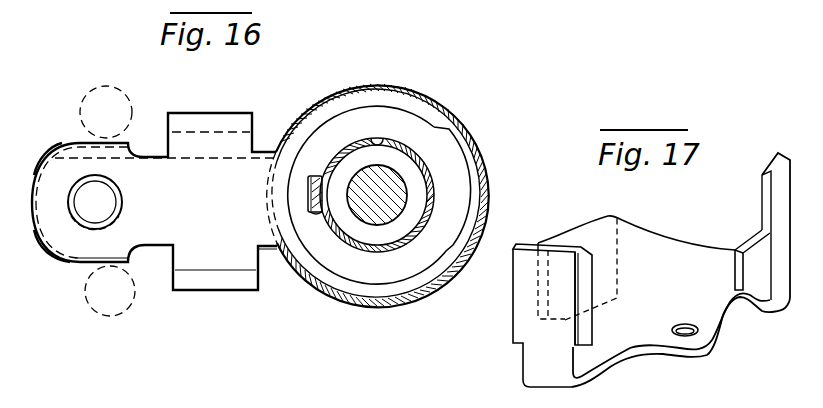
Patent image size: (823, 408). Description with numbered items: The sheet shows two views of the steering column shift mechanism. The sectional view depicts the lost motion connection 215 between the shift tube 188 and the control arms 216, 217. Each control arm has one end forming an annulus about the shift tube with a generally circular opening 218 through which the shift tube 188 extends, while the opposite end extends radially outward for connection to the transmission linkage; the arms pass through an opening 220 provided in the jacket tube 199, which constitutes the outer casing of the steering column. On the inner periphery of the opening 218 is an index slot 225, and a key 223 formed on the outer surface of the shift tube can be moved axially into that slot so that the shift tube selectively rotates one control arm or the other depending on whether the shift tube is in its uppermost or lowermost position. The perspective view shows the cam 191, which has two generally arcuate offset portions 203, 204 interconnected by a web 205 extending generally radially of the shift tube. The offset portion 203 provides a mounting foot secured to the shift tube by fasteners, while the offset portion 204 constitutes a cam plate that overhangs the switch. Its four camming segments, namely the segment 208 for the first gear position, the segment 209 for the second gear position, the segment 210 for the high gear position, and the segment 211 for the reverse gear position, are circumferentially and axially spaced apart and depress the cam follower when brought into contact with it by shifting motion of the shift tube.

In FIG. 16, the lost motion connection 215 is at (290, 207).
In FIG. 16, the control arm 216 is at (70, 267).
In FIG. 16, the control arm 217 is at (57, 170).
In FIG. 16, the opening 220 is at (293, 122).
In FIG. 16, the jacket tube 199 is at (436, 290).
In FIG. 16, the shift tube 188 is at (427, 158).
In FIG. 16, the circular opening 218 is at (387, 137).
In FIG. 16, the index slot 225 is at (307, 188).
In FIG. 16, the key 223 is at (317, 210).
In FIG. 17, the cam 191 is at (658, 358).
In FIG. 17, the cam plate 204 is at (510, 322).
In FIG. 17, the camming segment 209 is at (592, 321).
In FIG. 17, the offset portion 203 is at (630, 236).
In FIG. 17, the camming segment 211 is at (582, 226).
In FIG. 17, the web 205 is at (670, 256).
In FIG. 17, the camming segment 208 is at (762, 206).
In FIG. 17, the camming segment 210 is at (735, 270).